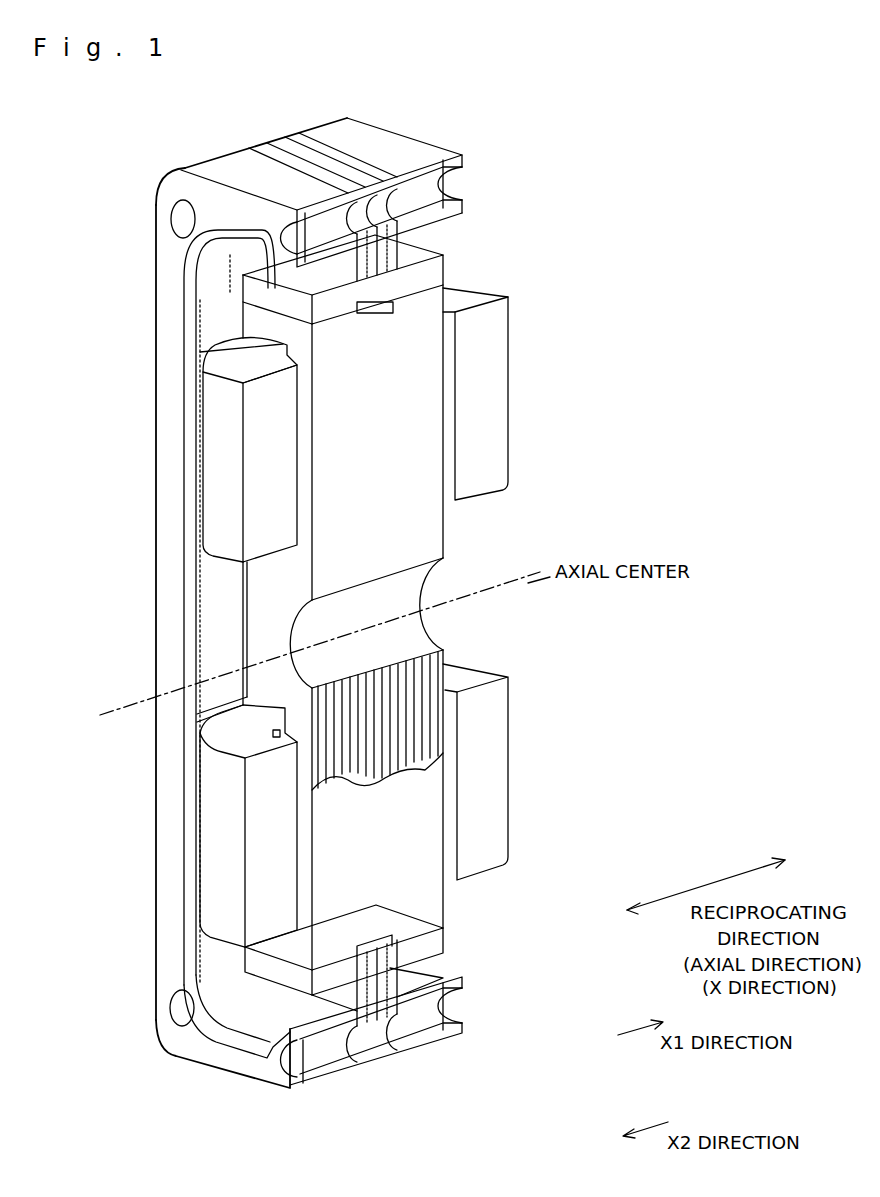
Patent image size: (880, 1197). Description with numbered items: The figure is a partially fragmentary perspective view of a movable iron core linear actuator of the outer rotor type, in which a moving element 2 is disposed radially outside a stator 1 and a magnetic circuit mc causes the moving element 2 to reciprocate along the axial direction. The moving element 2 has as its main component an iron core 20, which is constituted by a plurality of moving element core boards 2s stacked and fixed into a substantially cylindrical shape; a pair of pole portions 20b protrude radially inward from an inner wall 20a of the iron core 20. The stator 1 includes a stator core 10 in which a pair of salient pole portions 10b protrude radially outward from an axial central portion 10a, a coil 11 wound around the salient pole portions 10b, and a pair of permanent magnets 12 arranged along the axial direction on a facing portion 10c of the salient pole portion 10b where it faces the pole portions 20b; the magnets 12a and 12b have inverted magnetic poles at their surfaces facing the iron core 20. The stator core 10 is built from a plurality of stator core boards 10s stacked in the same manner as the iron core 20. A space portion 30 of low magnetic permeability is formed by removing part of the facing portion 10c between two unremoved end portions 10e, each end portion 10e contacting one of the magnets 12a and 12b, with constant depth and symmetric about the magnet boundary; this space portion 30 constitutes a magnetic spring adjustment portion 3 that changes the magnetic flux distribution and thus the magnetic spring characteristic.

The stator 1 is at (525, 688).
The moving element 2 is at (425, 132).
The moving element core boards 2s is at (258, 147).
The magnetic spring adjustment portion 3 is at (643, 340).
The stator core 10 is at (447, 538).
The axial central portion 10a is at (258, 625).
The salient pole portion 10b is at (425, 370).
The facing portion 10c is at (272, 318).
The end portion 10e is at (200, 352).
The stator core boards 10s is at (347, 776).
The coil 11 is at (258, 452).
The permanent magnets 12 is at (315, 982).
The permanent magnet 12a is at (200, 270).
The permanent magnet 12b is at (435, 268).
The iron core 20 is at (343, 160).
The inner wall 20a is at (342, 1012).
The pole portion 20b is at (392, 258).
The space portion 30 is at (400, 302).
The magnetic circuit mc is at (645, 421).